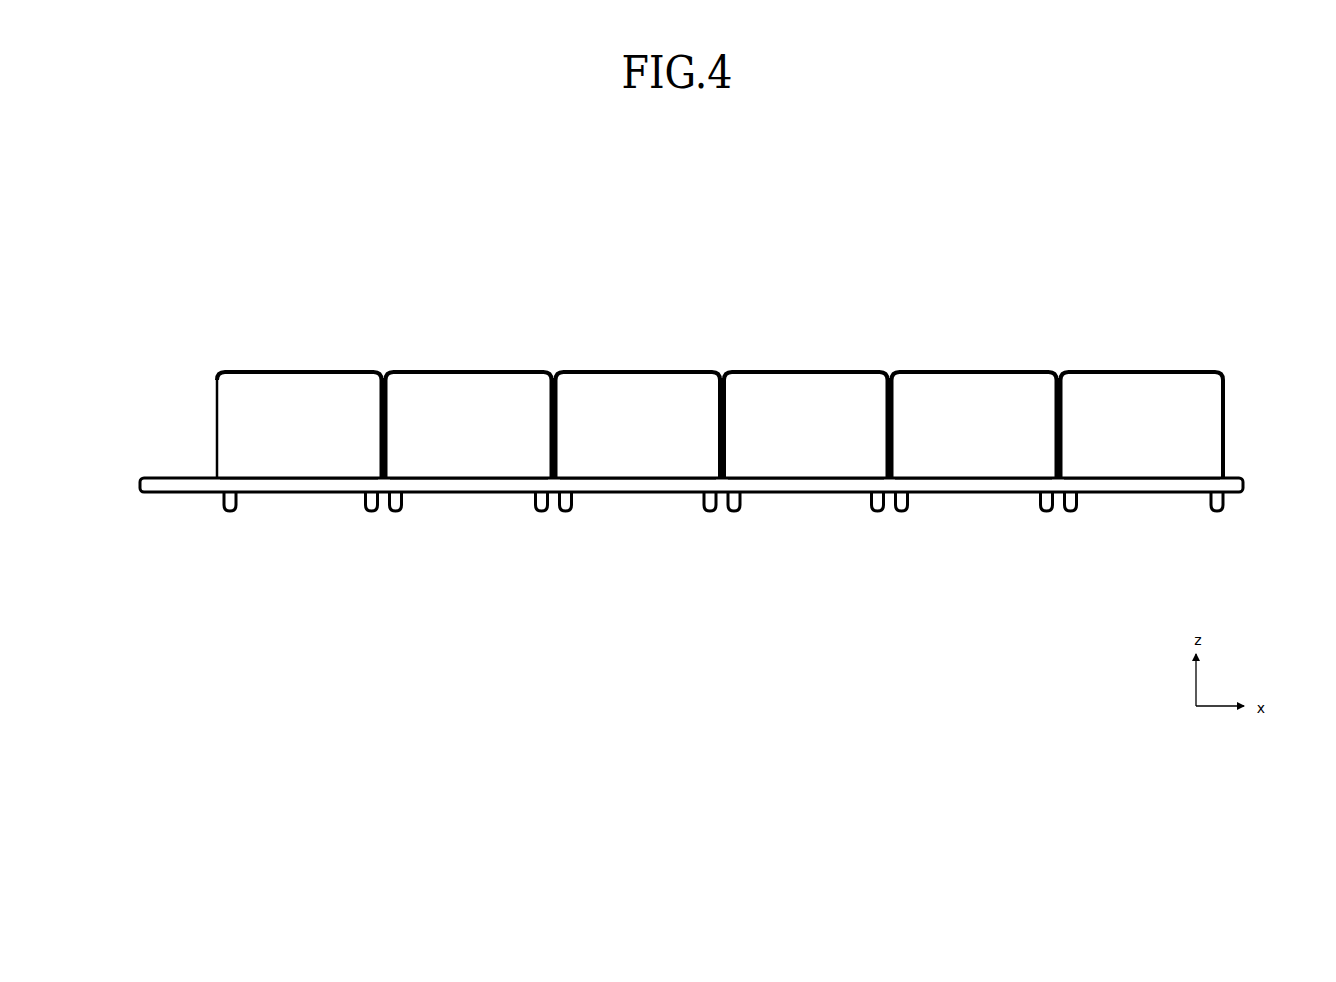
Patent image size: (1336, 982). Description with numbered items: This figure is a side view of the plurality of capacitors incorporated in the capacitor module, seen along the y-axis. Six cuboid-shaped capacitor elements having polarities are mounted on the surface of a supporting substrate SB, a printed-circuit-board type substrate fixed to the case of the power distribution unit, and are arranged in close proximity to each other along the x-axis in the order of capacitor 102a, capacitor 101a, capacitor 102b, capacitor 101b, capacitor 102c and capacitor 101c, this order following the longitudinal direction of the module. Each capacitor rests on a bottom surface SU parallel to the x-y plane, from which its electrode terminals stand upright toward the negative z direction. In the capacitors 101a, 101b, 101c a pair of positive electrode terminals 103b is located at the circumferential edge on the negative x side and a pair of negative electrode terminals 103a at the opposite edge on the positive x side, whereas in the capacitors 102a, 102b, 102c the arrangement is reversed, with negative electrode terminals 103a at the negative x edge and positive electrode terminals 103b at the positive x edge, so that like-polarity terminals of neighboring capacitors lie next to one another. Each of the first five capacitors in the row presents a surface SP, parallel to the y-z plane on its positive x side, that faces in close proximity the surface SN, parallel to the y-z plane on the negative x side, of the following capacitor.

The supporting substrate SB is at (162, 486).
The surface SP is at (390, 412).
The bottom surface SU is at (277, 481).
The surface SN is at (379, 440).
The capacitor 101a is at (485, 393).
The capacitor 101b is at (806, 400).
The capacitor 101c is at (1174, 400).
The capacitor 102a is at (271, 393).
The capacitor 102b is at (670, 393).
The capacitor 102c is at (996, 400).
The negative electrode terminal 103a is at (230, 512).
The positive electrode terminal 103b is at (372, 512).